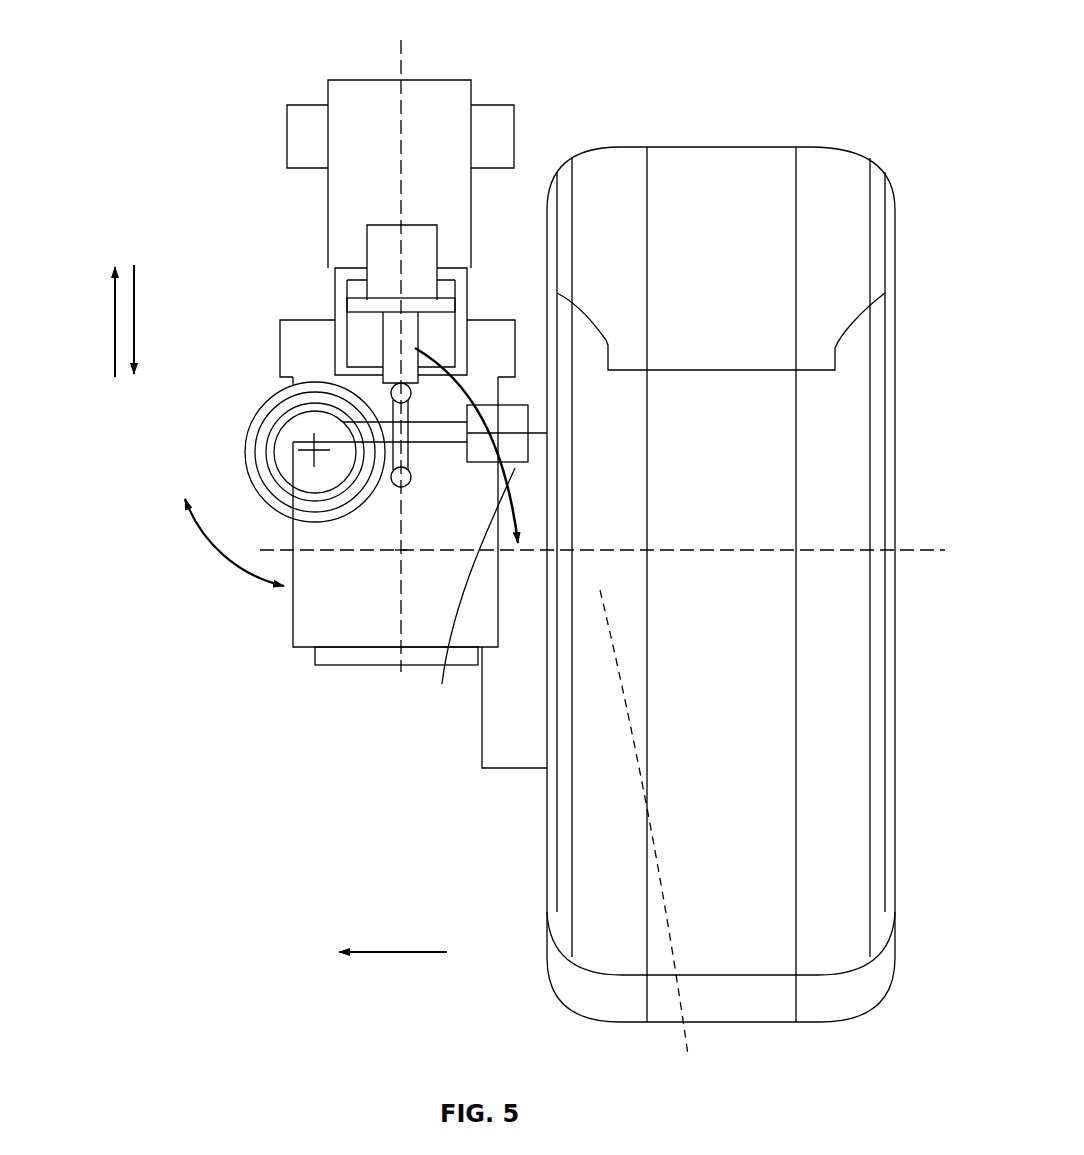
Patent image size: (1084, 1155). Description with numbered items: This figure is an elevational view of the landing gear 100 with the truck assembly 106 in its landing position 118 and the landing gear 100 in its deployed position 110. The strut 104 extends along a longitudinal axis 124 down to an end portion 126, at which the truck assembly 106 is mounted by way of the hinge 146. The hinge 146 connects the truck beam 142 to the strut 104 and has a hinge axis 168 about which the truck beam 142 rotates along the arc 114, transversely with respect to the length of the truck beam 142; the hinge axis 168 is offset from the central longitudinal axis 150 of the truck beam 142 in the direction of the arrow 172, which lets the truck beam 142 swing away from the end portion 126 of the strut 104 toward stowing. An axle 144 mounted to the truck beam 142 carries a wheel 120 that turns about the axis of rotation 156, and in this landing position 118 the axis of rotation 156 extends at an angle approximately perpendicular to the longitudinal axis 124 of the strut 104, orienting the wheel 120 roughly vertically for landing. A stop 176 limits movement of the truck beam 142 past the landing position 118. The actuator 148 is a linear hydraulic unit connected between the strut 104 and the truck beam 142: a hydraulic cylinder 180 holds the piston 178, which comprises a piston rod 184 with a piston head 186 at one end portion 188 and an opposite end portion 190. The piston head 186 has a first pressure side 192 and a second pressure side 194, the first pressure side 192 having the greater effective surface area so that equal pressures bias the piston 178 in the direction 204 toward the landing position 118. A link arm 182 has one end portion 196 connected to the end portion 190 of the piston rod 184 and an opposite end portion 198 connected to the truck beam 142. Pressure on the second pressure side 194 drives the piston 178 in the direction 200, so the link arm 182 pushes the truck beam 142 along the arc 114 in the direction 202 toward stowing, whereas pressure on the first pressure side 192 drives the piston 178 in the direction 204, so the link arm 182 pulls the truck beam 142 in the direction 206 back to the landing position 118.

The landing gear 100 is at (664, 63).
The strut 104 is at (449, 116).
The truck assembly 106 is at (247, 603).
The deployed position 110 is at (716, 95).
The arc 114 is at (199, 533).
The landing position 118 is at (286, 724).
The wheel 120 is at (824, 176).
The longitudinal axis 124 is at (405, 56).
The end portion 126 is at (499, 245).
The truck beam 142 is at (301, 656).
The axle 144 is at (658, 839).
The hinge 146 is at (262, 394).
The actuator 148 is at (322, 287).
The central longitudinal axis 150 is at (399, 554).
The axis of rotation 156 is at (918, 548).
The hinge axis 168 is at (300, 466).
The arrow 172 is at (392, 952).
The stop 176 is at (528, 420).
The piston 178 is at (430, 330).
The hydraulic cylinder 180 is at (470, 283).
The link arm 182 is at (376, 435).
The piston rod 184 is at (408, 345).
The piston head 186 is at (358, 296).
The end portion 188 is at (370, 330).
The end portion 190 is at (421, 399).
The first pressure side 192 is at (440, 317).
The second pressure side 194 is at (444, 282).
The end portion 196 is at (381, 393).
The end portion 198 is at (386, 488).
The arrow 200 is at (136, 320).
The arrow 202 is at (183, 499).
The arrow 204 is at (110, 321).
The arrow 206 is at (271, 596).